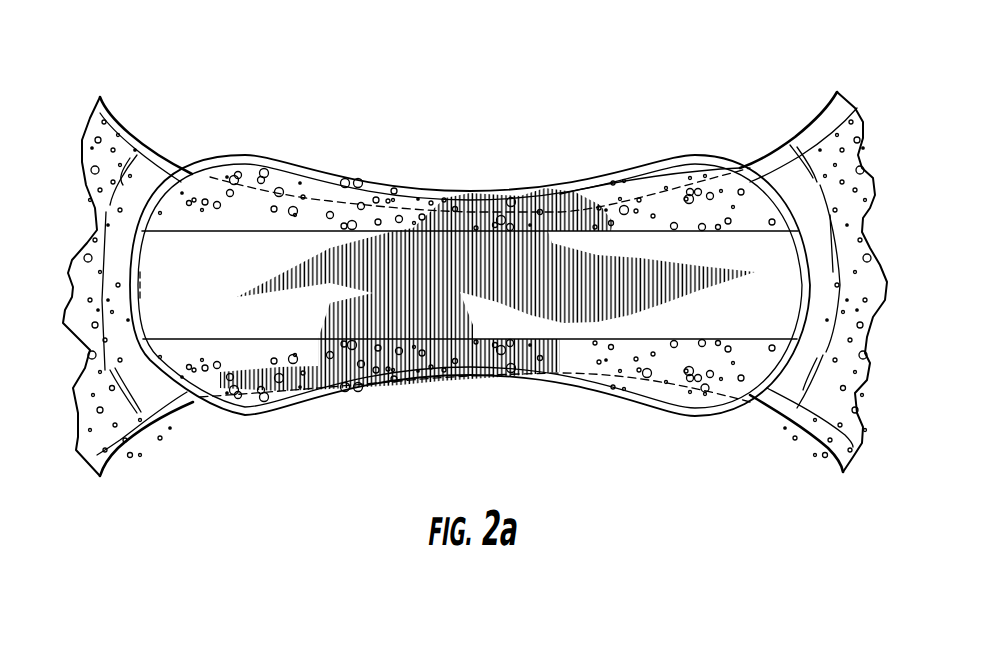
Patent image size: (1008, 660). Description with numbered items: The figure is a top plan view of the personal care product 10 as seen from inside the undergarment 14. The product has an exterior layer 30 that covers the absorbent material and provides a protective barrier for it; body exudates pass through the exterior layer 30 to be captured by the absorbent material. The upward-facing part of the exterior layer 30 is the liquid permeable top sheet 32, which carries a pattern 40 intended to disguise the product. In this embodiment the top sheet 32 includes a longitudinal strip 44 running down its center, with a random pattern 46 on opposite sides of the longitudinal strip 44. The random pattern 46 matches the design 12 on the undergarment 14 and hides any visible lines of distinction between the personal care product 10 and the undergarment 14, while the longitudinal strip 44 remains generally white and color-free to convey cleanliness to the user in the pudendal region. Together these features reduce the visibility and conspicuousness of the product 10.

The personal care product 10 is at (330, 85).
The design 12 is at (87, 442).
The undergarment 14 is at (130, 447).
The exterior layer 30 is at (702, 155).
The top sheet 32 is at (178, 268).
The pattern 40 is at (709, 396).
The longitudinal strip 44 is at (160, 322).
The random pattern 46 is at (620, 205).